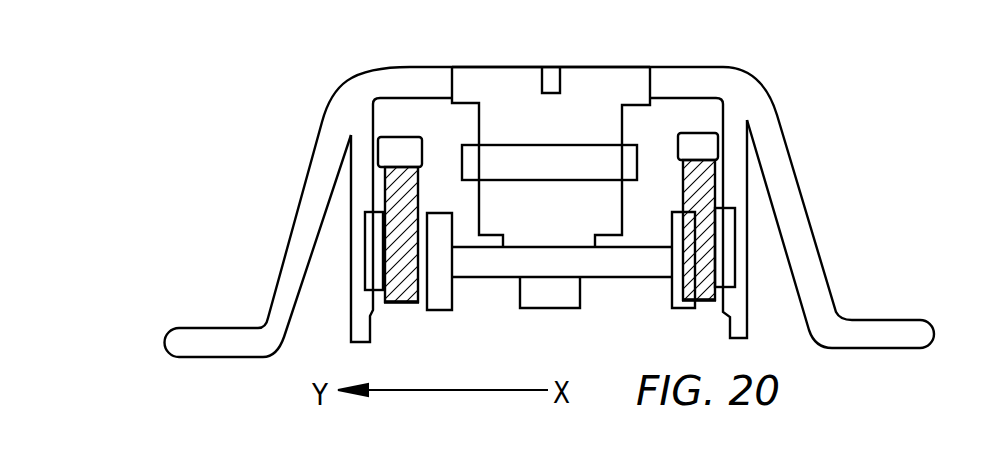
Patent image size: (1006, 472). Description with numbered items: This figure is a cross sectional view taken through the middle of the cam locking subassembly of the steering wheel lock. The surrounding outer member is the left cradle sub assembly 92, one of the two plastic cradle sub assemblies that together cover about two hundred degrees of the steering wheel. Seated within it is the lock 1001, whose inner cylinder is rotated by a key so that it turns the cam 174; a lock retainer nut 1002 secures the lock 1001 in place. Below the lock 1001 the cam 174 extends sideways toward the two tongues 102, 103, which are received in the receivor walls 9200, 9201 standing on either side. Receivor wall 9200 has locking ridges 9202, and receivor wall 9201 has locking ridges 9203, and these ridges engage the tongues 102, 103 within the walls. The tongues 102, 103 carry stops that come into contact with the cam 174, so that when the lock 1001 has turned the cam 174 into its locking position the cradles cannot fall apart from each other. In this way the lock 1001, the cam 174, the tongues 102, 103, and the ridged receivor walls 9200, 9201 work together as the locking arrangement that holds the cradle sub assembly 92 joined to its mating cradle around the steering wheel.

The left cradle sub assembly 92 is at (333, 147).
The lock 1001 is at (606, 88).
The lock retainer nut 1002 is at (633, 157).
The cam 174 is at (634, 256).
The tongue 102 is at (403, 297).
The tongue 103 is at (705, 300).
The receivor wall 9200 is at (362, 297).
The receivor wall 9201 is at (740, 323).
The locking ridges 9202 is at (368, 233).
The locking ridges 9203 is at (732, 223).